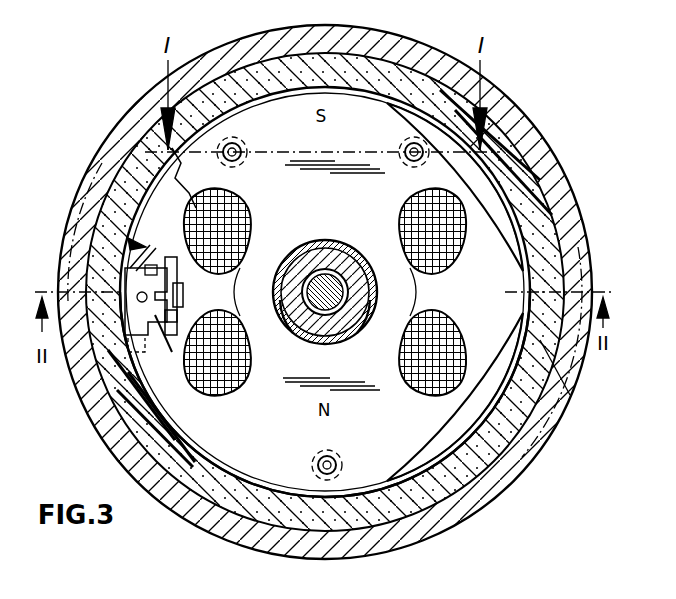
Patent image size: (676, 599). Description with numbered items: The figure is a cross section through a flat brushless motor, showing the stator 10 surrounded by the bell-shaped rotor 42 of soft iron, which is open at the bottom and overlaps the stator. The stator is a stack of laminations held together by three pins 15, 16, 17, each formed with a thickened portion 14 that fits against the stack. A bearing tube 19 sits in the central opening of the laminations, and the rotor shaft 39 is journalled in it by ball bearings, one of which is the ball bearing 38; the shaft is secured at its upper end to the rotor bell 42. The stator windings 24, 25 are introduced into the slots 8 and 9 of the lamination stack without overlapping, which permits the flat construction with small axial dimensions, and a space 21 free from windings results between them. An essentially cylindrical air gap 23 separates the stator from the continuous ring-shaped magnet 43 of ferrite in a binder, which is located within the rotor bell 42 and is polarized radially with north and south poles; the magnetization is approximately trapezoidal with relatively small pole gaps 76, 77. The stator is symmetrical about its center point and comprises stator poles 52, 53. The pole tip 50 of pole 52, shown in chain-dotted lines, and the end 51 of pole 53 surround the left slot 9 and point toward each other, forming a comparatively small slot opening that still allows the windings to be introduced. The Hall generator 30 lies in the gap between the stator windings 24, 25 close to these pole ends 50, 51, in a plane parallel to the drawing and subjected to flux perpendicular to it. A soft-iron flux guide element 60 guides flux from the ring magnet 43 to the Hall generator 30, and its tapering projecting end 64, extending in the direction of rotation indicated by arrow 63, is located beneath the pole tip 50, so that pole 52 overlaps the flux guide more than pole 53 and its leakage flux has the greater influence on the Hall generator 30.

The slot 8 is at (400, 222).
The slot 9 is at (250, 213).
The stator 10 is at (328, 219).
The thickened portion 14 is at (243, 145).
The pin 15 is at (327, 465).
The pin 16 is at (404, 157).
The pin 17 is at (238, 158).
The bearing tube 19 is at (298, 331).
The space free from windings 21 is at (185, 300).
The air gap 23 is at (145, 388).
The stator winding 24 is at (456, 233).
The stator winding 25 is at (449, 361).
The Hall generator 30 is at (200, 290).
The ball bearing 38 is at (352, 333).
The rotor shaft 39 is at (340, 283).
The bell-shaped rotor 42 is at (552, 163).
The ring-shaped magnet 43 is at (524, 248).
The pole tip 50 is at (108, 162).
The pole tip 51 is at (135, 337).
The stator pole 52 is at (396, 60).
The stator pole 53 is at (459, 487).
The flux guide element 60 is at (125, 256).
The arrow indicating direction of rotation 63 is at (566, 364).
The tapering projecting end 64 is at (147, 236).
The pole gap 76 is at (548, 441).
The pole gap 77 is at (168, 150).